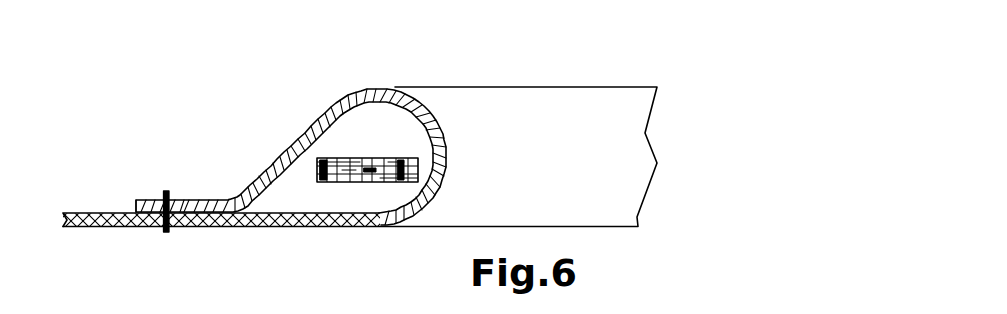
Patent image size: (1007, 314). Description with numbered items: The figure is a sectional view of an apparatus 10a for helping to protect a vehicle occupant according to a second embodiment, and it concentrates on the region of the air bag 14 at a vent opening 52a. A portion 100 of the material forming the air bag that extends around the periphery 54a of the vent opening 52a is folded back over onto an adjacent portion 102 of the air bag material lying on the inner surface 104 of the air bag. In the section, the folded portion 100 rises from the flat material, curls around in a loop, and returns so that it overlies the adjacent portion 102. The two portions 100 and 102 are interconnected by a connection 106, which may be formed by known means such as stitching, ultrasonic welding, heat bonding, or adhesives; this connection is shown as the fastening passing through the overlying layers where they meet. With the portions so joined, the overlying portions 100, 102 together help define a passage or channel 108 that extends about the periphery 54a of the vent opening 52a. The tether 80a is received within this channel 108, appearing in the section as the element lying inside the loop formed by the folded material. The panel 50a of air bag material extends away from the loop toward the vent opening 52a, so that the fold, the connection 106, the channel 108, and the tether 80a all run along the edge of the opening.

The apparatus 10a is at (110, 86).
The air bag 14 is at (88, 213).
The panel 50a is at (572, 58).
The vent opening 52a is at (548, 211).
The periphery 54a is at (446, 146).
The tether 80a is at (378, 167).
The portion 100 is at (307, 142).
The adjacent portion 102 is at (235, 230).
The inner surface 104 is at (114, 205).
The connection 106 is at (163, 230).
The channel 108 is at (371, 119).